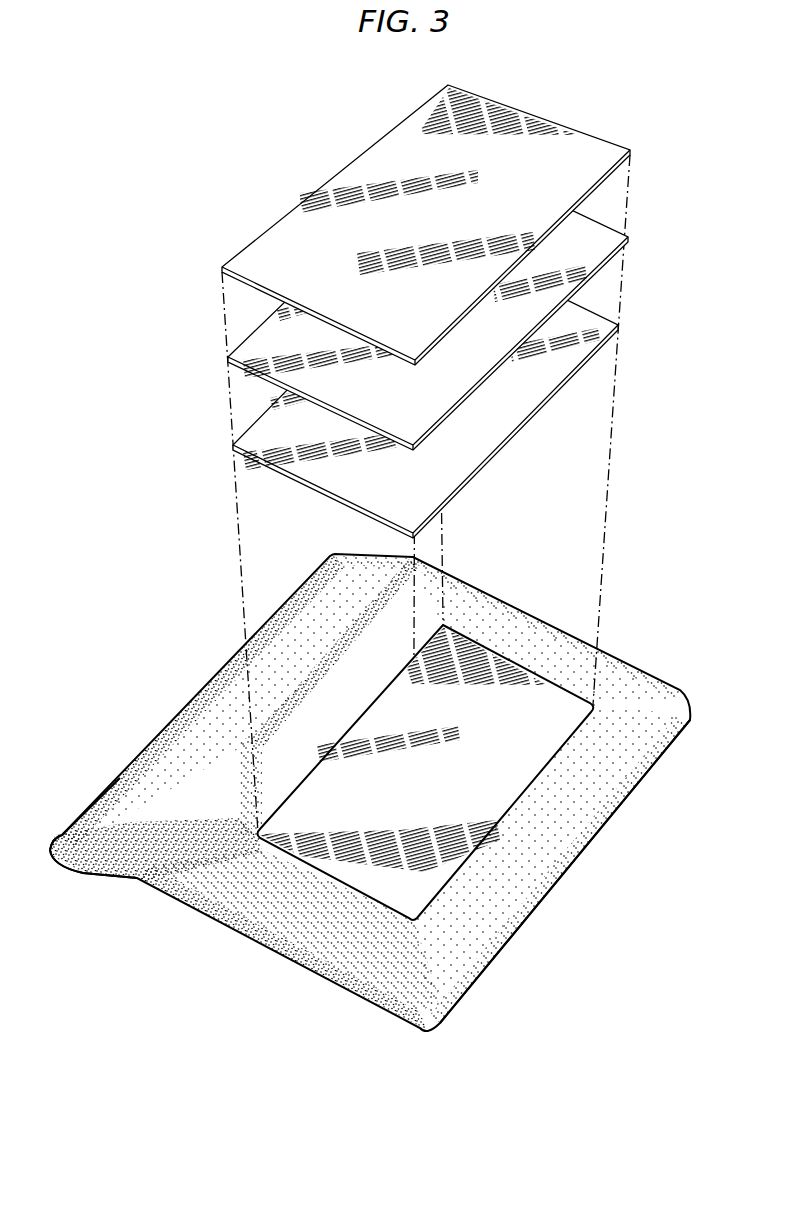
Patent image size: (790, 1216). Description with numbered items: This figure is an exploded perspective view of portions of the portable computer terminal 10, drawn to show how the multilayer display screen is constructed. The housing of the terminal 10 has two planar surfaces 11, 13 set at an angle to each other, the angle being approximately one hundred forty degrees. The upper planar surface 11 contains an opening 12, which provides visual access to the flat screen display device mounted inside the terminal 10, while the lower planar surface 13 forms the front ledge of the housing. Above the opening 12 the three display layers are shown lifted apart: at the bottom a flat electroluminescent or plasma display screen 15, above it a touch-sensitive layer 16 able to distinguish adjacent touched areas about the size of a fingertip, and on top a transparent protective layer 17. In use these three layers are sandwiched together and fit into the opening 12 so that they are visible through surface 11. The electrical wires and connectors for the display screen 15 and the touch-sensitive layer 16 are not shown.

The terminal 10 is at (672, 632).
The planar surface 11 is at (523, 900).
The opening 12 is at (507, 688).
The planar surface 13 is at (113, 779).
The flat display screen 15 is at (248, 438).
The touch-sensitive layer 16 is at (245, 349).
The transparent protective layer 17 is at (635, 114).